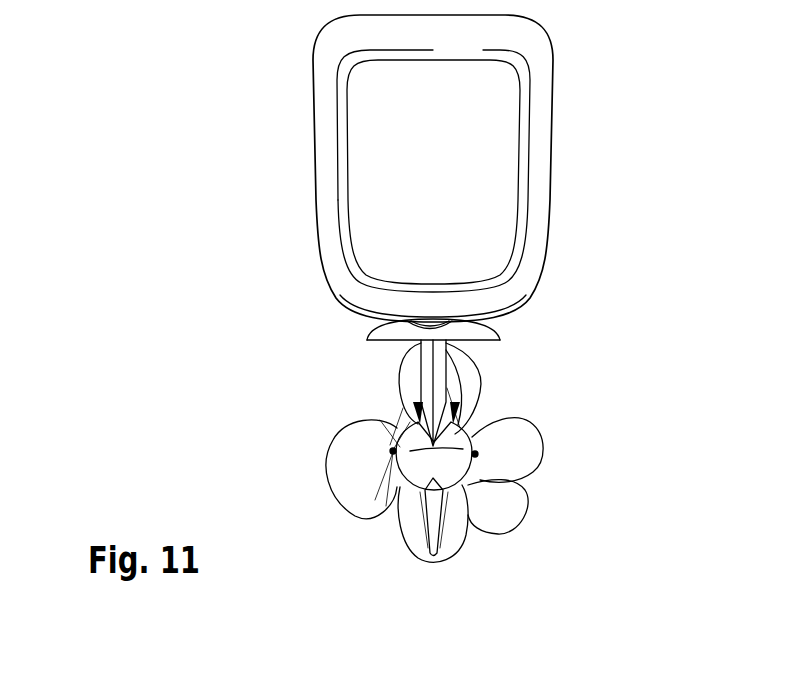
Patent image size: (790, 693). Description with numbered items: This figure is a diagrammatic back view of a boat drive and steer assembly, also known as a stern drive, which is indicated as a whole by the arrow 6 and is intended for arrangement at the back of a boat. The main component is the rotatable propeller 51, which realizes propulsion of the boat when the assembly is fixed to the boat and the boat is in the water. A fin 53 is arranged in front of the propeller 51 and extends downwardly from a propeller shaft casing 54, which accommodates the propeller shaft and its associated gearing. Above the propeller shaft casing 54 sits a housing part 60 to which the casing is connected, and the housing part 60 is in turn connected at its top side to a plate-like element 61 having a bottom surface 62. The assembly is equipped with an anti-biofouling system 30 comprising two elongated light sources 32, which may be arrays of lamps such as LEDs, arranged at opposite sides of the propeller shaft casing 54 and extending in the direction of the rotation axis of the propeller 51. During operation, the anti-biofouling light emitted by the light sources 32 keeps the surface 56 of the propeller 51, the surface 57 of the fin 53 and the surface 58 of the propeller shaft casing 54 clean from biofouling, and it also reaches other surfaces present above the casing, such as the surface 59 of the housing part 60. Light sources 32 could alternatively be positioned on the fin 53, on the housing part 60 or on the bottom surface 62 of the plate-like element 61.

The housing head 6 is at (572, 168).
The anti-biofouling system 30 is at (445, 462).
The elongated light sources 32 is at (393, 451).
The propeller 51 is at (505, 505).
The fin 53 is at (437, 540).
The propeller shaft casing 54 is at (453, 437).
The surface of the propeller 56 is at (518, 450).
The surface of the fin 57 is at (427, 542).
The surface of the propeller shaft casing 58 is at (468, 473).
The surface of the housing part 59 is at (420, 358).
The housing part 60 is at (427, 372).
The plate-like element 61 is at (473, 332).
The bottom surface of the plate-like element 62 is at (483, 345).